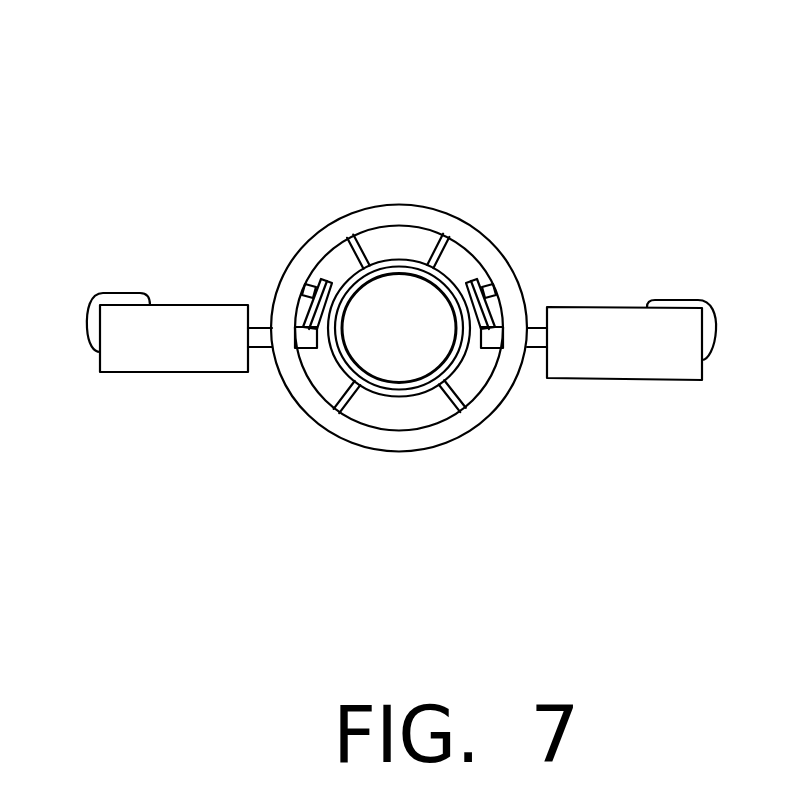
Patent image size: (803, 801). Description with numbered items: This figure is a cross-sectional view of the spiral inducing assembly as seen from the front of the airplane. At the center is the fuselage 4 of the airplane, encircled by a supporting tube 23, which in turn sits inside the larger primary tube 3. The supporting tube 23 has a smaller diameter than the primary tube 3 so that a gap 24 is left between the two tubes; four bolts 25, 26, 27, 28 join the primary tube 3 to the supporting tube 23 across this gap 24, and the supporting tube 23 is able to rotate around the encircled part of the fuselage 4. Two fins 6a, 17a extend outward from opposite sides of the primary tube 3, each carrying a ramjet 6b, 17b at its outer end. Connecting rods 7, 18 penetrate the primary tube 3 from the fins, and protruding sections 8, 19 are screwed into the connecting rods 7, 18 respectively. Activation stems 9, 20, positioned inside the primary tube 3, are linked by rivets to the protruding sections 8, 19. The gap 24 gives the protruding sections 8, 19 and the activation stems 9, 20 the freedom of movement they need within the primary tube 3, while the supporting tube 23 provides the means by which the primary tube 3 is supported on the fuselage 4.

The primary tube 3 is at (373, 440).
The fuselage 4 is at (400, 308).
The fin 6a is at (565, 345).
The ramjet 6b is at (678, 303).
The connecting rod 7 is at (535, 345).
The protruding section 8 is at (490, 298).
The activation stem 9 is at (483, 290).
The fin 17a is at (198, 350).
The ramjet 17b is at (112, 298).
The connecting rod 18 is at (255, 342).
The protruding section 19 is at (303, 305).
The activation stem 20 is at (313, 287).
The supporting tube 23 is at (398, 395).
The gap 24 is at (462, 262).
The bolt 25 is at (360, 257).
The bolt 26 is at (434, 262).
The bolt 27 is at (445, 383).
The bolt 28 is at (357, 390).